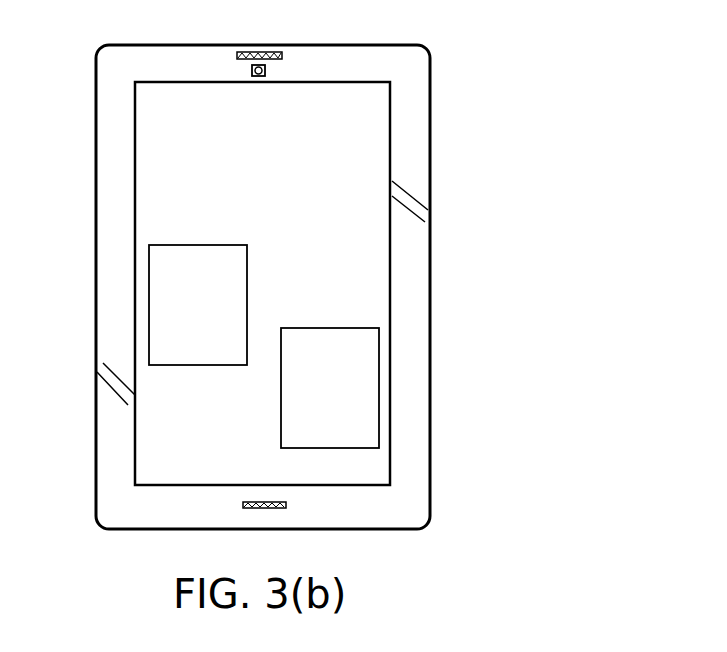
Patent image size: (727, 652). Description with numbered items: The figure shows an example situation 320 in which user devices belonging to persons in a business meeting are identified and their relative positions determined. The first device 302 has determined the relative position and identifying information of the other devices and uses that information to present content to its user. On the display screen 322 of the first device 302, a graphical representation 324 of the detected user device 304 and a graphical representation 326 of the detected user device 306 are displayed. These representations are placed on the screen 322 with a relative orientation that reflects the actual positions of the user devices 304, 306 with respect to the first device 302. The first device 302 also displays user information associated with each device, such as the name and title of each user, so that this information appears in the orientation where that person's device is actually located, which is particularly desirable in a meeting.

The situation 320 is at (590, 152).
The first device 302 is at (430, 287).
The display screen 322 is at (135, 175).
The graphical representation 326 is at (149, 307).
The user device 306 is at (198, 305).
The graphical representation 324 is at (379, 389).
The user device 304 is at (330, 388).